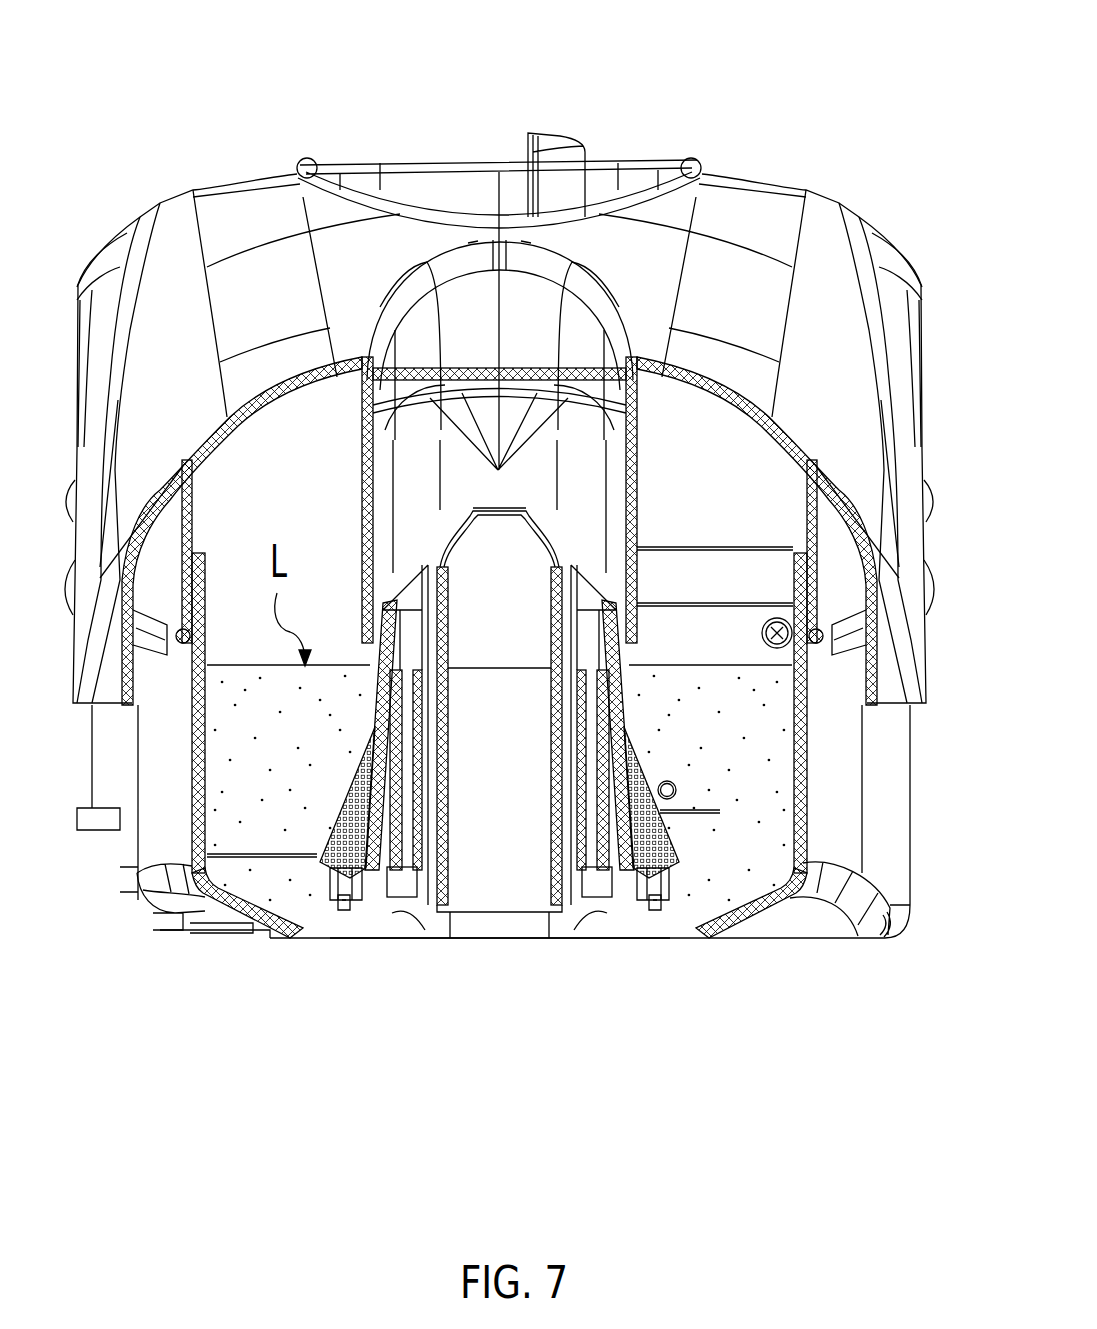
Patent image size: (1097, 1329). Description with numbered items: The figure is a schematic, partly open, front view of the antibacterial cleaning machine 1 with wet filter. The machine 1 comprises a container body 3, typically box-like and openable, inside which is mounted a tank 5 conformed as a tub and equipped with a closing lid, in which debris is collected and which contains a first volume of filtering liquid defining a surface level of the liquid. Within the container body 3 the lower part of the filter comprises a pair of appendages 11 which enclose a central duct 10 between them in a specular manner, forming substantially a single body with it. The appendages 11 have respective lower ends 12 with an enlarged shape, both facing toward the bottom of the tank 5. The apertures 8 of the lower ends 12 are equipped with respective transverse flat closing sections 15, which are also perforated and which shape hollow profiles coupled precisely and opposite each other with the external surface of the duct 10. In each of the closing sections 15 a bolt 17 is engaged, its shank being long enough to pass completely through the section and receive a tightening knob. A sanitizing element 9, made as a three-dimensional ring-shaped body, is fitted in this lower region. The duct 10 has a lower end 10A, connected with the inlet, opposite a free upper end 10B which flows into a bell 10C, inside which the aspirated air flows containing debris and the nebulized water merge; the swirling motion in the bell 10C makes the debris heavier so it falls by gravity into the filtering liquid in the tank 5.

The antibacterial cleaning machine 1 is at (767, 161).
The container body 3 is at (168, 265).
The tank 5 is at (278, 892).
The apertures 8 is at (331, 799).
The sanitizing element 9 is at (367, 887).
The central duct 10 is at (530, 763).
The lower end of the duct 10A is at (497, 910).
The upper end of the duct 10B is at (493, 510).
The bell 10C is at (520, 388).
The appendages 11 is at (340, 770).
The lower ends of the appendages 12 is at (320, 845).
The transverse flat closing sections 15 is at (335, 878).
The bolt 17 is at (343, 903).